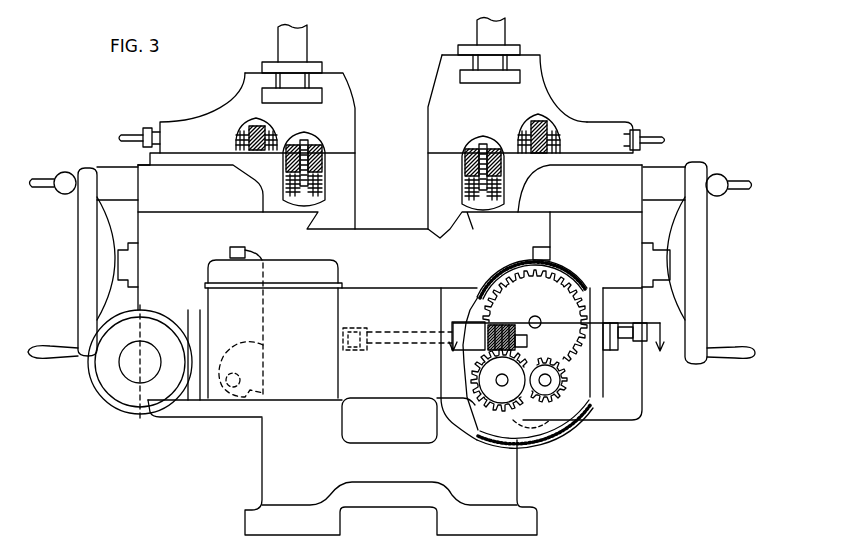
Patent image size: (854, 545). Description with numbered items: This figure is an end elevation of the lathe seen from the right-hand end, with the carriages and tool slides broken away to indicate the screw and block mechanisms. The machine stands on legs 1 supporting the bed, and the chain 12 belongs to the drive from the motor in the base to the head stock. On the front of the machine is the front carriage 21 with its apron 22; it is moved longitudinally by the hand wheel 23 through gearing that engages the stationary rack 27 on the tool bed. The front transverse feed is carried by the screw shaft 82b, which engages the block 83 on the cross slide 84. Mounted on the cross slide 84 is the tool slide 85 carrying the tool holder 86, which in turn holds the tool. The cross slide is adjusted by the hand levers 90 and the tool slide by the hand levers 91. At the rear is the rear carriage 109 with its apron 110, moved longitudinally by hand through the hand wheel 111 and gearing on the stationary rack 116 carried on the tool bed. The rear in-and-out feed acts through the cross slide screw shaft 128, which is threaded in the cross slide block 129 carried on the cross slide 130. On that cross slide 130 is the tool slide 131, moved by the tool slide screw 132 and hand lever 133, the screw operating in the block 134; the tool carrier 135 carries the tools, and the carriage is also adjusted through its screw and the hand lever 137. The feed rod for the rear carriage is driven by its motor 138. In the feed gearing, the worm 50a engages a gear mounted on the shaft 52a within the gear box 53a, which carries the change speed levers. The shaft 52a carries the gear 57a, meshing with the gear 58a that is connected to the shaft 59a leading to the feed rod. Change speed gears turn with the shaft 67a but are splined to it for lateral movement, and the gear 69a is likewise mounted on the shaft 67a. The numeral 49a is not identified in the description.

The legs 1 is at (247, 512).
The chain 12 is at (556, 349).
The front carriage 21 is at (173, 200).
The apron 22 is at (167, 267).
The hand wheel 23 is at (83, 278).
The stationary rack 27 is at (230, 253).
The shaft bearing 49a is at (470, 345).
The worm 50a is at (492, 326).
The shaft 52a is at (502, 388).
The gear box 53a is at (582, 288).
The gear 57a is at (482, 408).
The gear 58a is at (568, 395).
The shaft 59a is at (547, 390).
The shaft 67a is at (533, 316).
The gear 69a is at (490, 336).
The screw shaft 82b is at (330, 185).
The block 83 is at (327, 200).
The cross slide 84 is at (347, 168).
The tool slide 85 is at (325, 82).
The tool holder 86 is at (285, 43).
The hand levers 90 is at (63, 173).
The hand levers 91 is at (135, 133).
The rear carriage 109 is at (627, 203).
The apron 110 is at (628, 255).
The hand wheel 111 is at (700, 305).
The stationary rack 116 is at (552, 253).
The cross slide screw shaft 128 is at (507, 187).
The cross slide block 129 is at (463, 173).
The cross slide 130 is at (577, 162).
The tool slide 131 is at (533, 72).
The tool slide screw 132 is at (550, 133).
The hand lever 133 is at (642, 135).
The block 134 is at (535, 125).
The tool carrier 135 is at (507, 28).
The hand lever 137 is at (723, 175).
The motor 138 is at (113, 380).